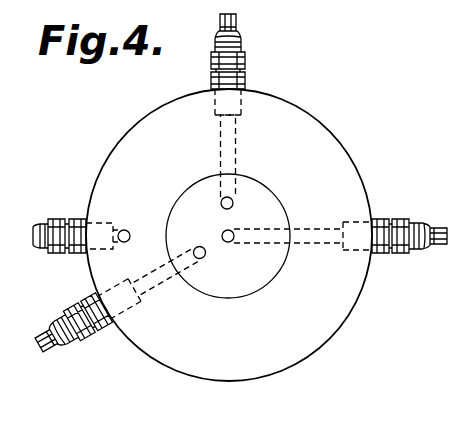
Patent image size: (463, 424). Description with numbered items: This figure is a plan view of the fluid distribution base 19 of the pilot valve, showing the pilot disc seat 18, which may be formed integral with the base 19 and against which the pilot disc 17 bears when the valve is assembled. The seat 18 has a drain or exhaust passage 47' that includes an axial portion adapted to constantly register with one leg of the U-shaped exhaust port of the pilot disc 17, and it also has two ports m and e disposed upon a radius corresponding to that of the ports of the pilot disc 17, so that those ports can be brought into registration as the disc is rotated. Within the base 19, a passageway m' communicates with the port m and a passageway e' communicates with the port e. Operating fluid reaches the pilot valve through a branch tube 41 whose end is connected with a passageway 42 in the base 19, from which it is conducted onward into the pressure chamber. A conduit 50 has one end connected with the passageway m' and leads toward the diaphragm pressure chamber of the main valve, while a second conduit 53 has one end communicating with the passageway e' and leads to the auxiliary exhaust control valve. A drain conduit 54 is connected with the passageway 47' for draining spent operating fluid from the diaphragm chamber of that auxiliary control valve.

The pilot disc 17 is at (462, 114).
The pilot disc seat 18 is at (272, 196).
The fluid distribution base 19 is at (208, 380).
The branch tube 41 is at (42, 225).
The passageway 42 is at (126, 230).
The drain or exhaust passage 47' is at (297, 249).
The conduit 50 is at (50, 346).
The second conduit 53 is at (238, 16).
The drain conduit 54 is at (438, 244).
The port e is at (218, 184).
The passageway e' is at (241, 142).
The port m is at (211, 261).
The passageway m' is at (149, 282).